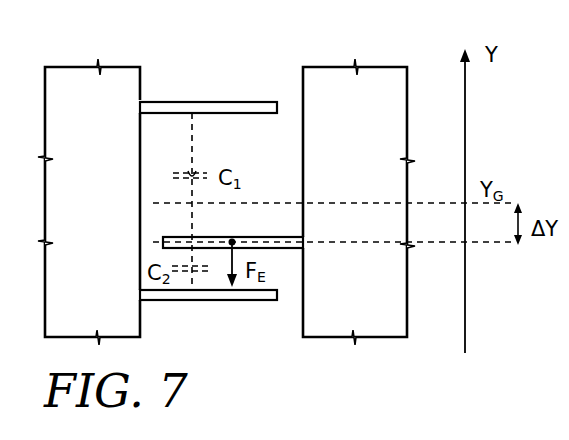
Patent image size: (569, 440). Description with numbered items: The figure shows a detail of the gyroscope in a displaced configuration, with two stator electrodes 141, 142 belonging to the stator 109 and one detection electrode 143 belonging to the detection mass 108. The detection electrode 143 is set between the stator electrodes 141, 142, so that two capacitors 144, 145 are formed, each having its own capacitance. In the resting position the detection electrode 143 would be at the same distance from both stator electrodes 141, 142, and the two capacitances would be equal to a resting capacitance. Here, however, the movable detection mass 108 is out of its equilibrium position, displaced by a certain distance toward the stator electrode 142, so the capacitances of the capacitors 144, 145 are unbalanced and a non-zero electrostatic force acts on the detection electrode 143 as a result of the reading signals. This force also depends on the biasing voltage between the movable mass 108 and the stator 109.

The stator 109 is at (117, 67).
The stator electrode 141 is at (183, 102).
The stator electrode 142 is at (245, 302).
The detection electrode 143 is at (268, 237).
The capacitor 144 is at (197, 172).
The capacitor 145 is at (203, 276).
The detection mass 108 is at (407, 297).